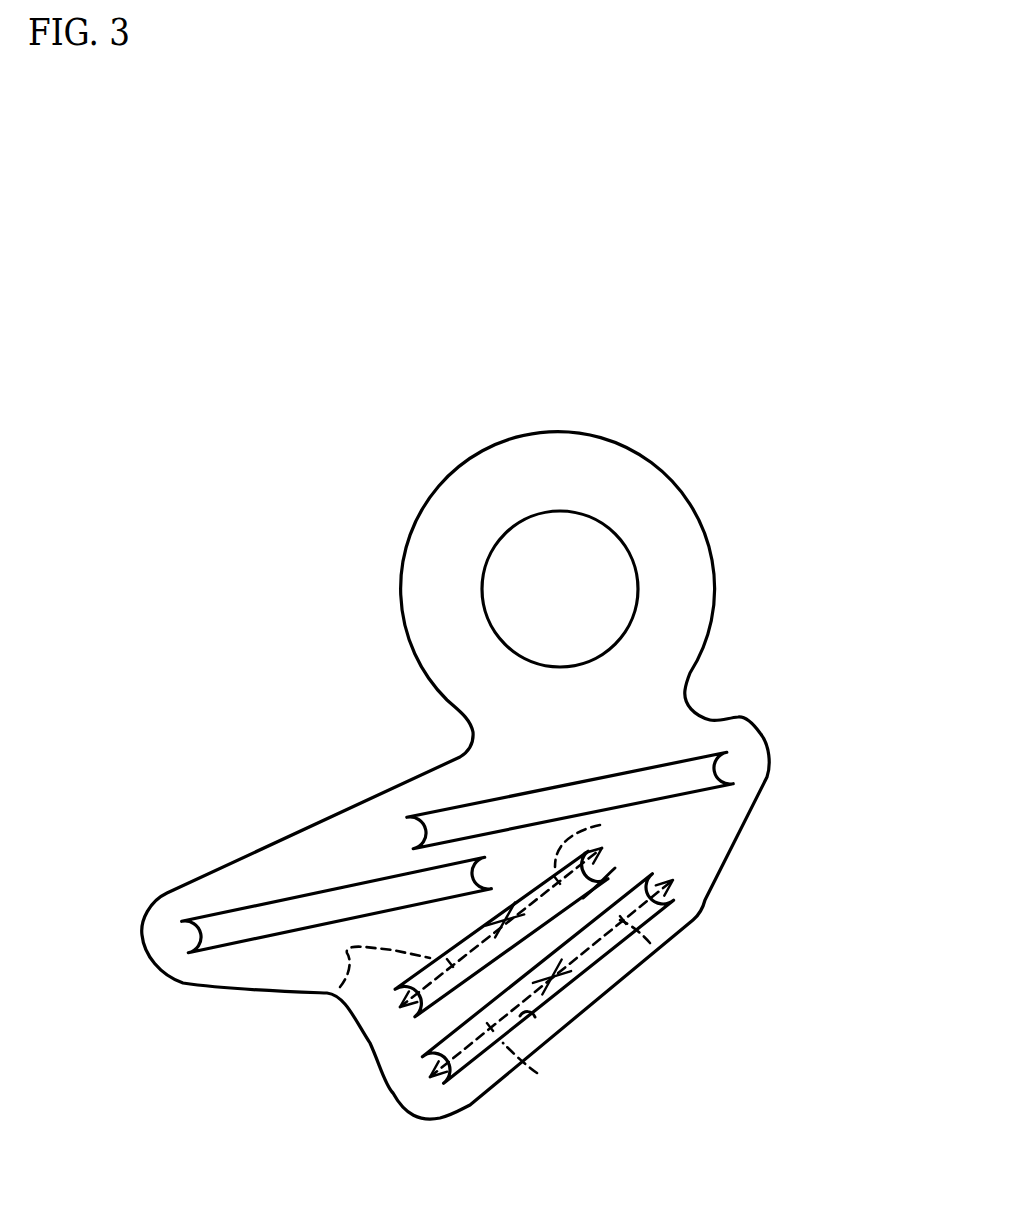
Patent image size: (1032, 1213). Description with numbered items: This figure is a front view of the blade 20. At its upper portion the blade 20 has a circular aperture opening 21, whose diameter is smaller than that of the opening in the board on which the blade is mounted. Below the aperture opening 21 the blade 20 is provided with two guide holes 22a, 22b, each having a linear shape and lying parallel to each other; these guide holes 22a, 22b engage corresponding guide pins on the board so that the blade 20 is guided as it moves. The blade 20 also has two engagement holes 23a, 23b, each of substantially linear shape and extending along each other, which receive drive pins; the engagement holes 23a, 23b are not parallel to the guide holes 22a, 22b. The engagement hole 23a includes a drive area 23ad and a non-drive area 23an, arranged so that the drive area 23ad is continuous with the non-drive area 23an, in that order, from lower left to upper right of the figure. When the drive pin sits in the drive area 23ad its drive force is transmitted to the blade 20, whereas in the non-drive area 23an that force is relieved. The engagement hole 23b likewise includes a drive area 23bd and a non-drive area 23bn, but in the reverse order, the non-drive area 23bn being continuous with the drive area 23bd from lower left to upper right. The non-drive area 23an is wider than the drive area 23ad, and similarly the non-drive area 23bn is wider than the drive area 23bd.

The blade 20 is at (777, 523).
The aperture opening 21 is at (597, 562).
The guide hole 22a is at (707, 758).
The guide hole 22b is at (325, 891).
The engagement hole 23a is at (617, 863).
The engagement hole 23b is at (525, 1013).
The non-drive area 23an is at (600, 825).
The drive area 23ad is at (340, 987).
The drive area 23bd is at (650, 943).
The non-drive area 23bn is at (537, 1073).